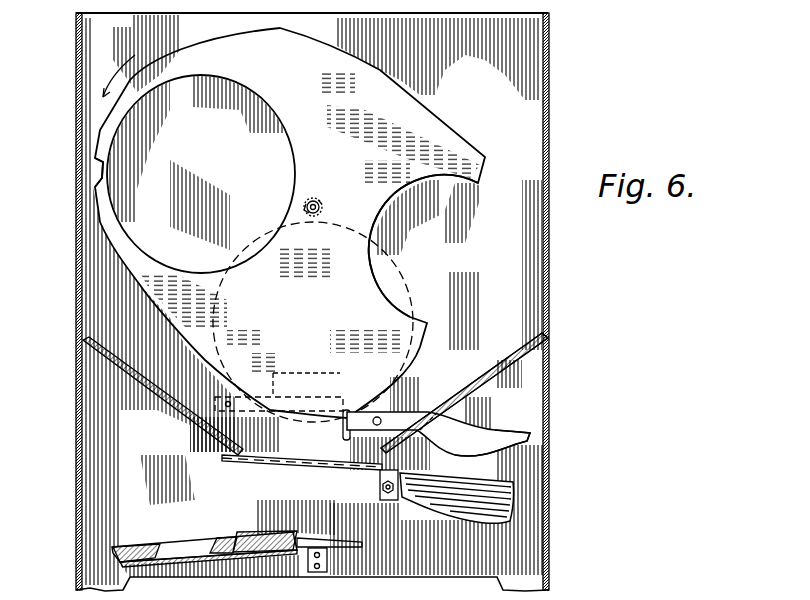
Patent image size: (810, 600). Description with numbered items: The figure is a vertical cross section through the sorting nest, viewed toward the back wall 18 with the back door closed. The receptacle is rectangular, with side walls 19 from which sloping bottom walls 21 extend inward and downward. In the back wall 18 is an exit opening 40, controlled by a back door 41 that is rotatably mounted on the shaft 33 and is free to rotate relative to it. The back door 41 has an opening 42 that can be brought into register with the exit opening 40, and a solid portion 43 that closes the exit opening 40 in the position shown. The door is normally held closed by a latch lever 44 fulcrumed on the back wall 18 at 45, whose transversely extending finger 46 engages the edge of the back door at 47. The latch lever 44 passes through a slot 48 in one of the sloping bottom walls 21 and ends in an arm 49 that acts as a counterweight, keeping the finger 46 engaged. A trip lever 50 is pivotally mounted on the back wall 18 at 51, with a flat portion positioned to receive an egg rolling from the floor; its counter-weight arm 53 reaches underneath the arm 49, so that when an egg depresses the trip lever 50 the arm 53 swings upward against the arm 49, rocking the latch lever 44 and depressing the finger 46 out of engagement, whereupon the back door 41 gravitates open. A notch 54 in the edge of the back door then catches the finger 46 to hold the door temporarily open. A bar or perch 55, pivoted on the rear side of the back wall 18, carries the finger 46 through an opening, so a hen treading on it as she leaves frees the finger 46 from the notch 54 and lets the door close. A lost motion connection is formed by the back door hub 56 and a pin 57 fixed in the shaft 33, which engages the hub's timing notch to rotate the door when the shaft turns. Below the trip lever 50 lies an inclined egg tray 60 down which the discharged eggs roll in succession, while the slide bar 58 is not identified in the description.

The back wall 18 is at (522, 86).
The side walls 19 is at (76, 141).
The sloping bottom walls 21 is at (180, 413).
The shaft 33 is at (316, 200).
The exit opening 40 is at (398, 275).
The back door 41 is at (400, 100).
The opening 42 is at (250, 95).
The solid portion 43 is at (333, 330).
The latch lever 44 is at (400, 414).
The fulcrum 45 is at (377, 427).
The finger 46 is at (341, 408).
The edge engagement point 47 is at (340, 424).
The slot 48 is at (465, 390).
The arm 49 is at (530, 434).
The trip lever 50 is at (226, 462).
The pivot 51 is at (388, 498).
The counter-weight arm 53 is at (507, 482).
The notch 54 is at (100, 173).
The bar or perch 55 is at (278, 397).
The hub 56 is at (305, 206).
The pin 57 is at (321, 206).
The slide rod 58 is at (306, 462).
The egg tray 60 is at (174, 545).